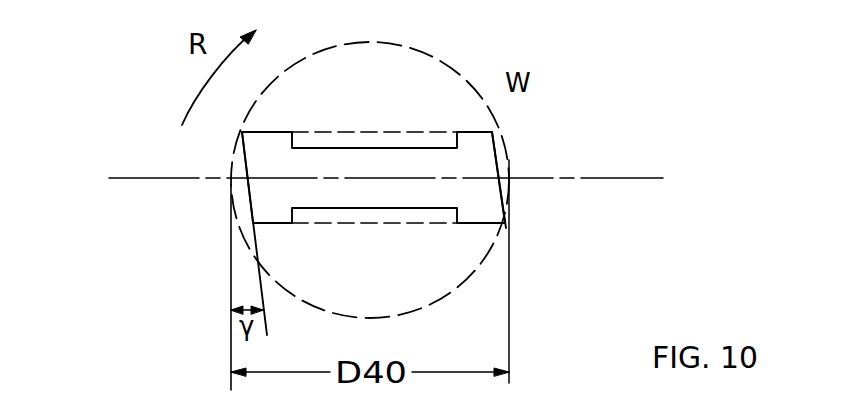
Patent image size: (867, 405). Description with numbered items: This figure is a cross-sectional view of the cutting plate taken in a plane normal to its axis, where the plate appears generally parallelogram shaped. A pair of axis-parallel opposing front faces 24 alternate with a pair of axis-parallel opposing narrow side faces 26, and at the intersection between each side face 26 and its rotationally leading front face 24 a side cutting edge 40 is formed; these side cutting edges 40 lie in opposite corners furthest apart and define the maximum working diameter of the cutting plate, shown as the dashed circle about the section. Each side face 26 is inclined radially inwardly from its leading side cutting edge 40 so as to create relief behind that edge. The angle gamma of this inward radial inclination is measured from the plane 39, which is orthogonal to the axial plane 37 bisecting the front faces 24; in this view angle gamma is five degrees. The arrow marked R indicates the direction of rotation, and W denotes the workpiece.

The front face 24 is at (270, 131).
The side face 26 is at (497, 160).
The axial plane 37 is at (643, 178).
The plane 39 is at (230, 278).
The side cutting edge 40 is at (242, 131).